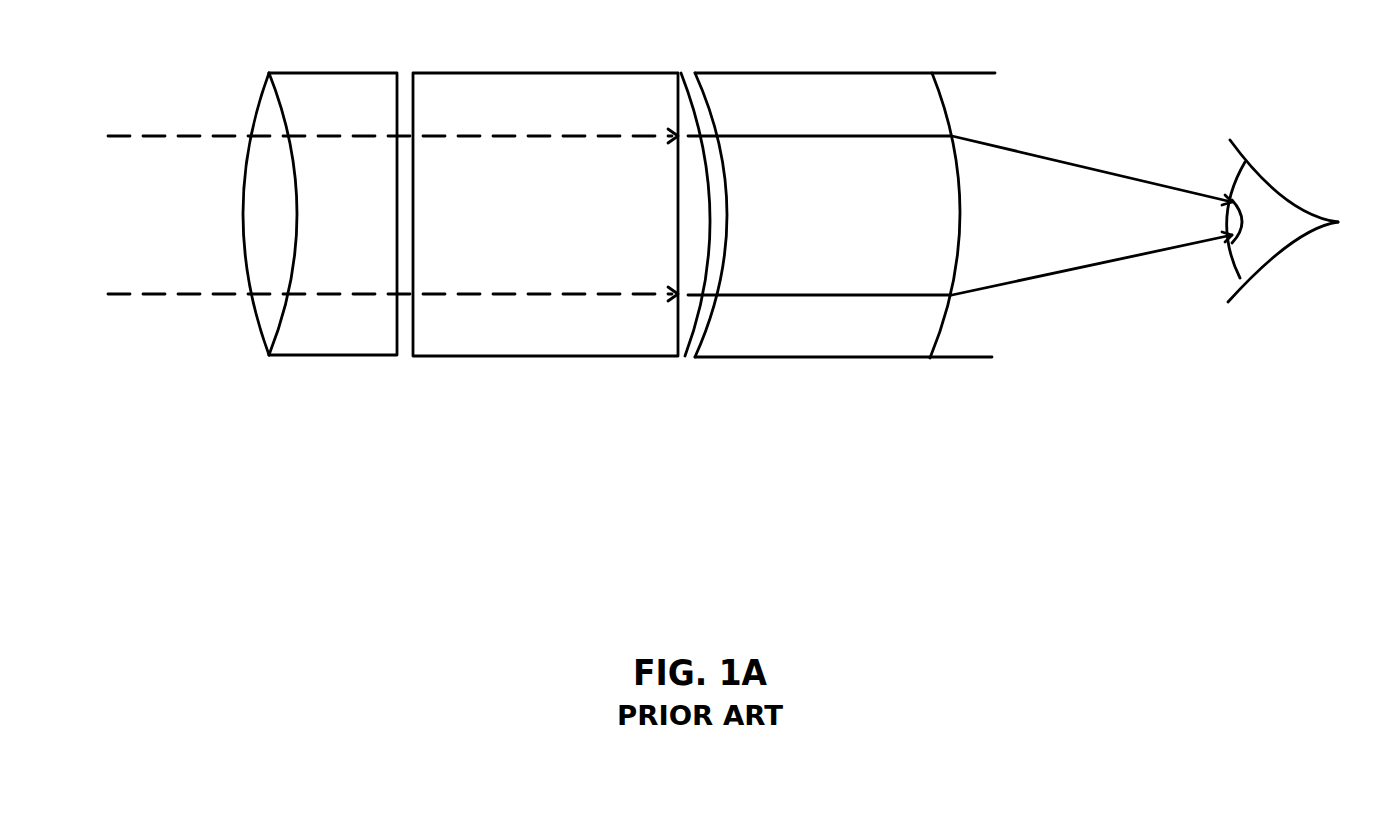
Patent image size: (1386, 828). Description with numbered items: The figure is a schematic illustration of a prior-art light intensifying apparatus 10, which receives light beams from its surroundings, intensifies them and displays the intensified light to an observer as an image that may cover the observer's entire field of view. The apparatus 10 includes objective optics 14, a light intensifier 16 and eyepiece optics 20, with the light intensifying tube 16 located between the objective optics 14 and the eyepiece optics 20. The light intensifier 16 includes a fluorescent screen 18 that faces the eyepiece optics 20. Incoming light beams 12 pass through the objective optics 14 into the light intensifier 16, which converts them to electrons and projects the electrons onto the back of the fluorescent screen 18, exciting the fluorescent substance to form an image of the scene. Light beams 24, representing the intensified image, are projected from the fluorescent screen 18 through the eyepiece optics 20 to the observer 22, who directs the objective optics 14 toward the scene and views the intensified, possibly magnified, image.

The light intensifying apparatus 10 is at (427, 482).
The light beams 12 is at (190, 136).
The objective optics 14 is at (333, 358).
The light intensifier 16 is at (555, 358).
The fluorescent screen 18 is at (687, 312).
The eyepiece optics 20 is at (837, 360).
The observer 22 is at (1293, 242).
The light beams 24 is at (748, 137).